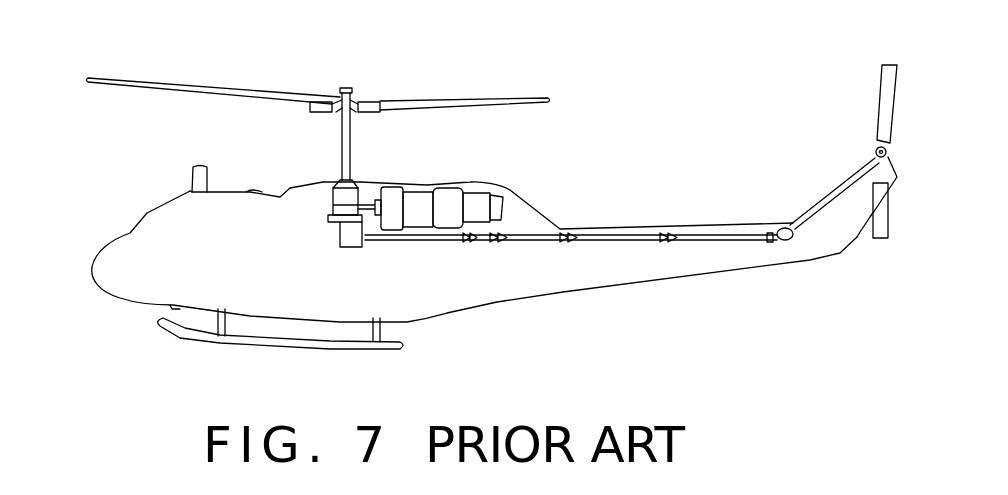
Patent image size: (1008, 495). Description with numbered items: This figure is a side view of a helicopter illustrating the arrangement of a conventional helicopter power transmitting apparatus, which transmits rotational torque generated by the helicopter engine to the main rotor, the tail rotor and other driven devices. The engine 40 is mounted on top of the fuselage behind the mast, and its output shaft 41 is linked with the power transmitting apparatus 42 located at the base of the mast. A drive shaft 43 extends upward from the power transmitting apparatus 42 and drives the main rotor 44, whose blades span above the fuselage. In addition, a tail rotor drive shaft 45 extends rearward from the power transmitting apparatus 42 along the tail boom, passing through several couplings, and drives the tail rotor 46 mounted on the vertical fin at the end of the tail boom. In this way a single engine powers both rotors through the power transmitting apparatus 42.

The engine 40 is at (443, 202).
The output shaft 41 is at (365, 200).
The power transmitting apparatus 42 is at (330, 235).
The drive shaft 43 is at (340, 132).
The main rotor 44 is at (415, 100).
The tail rotor drive shaft 45 is at (482, 240).
The tail rotor 46 is at (877, 113).